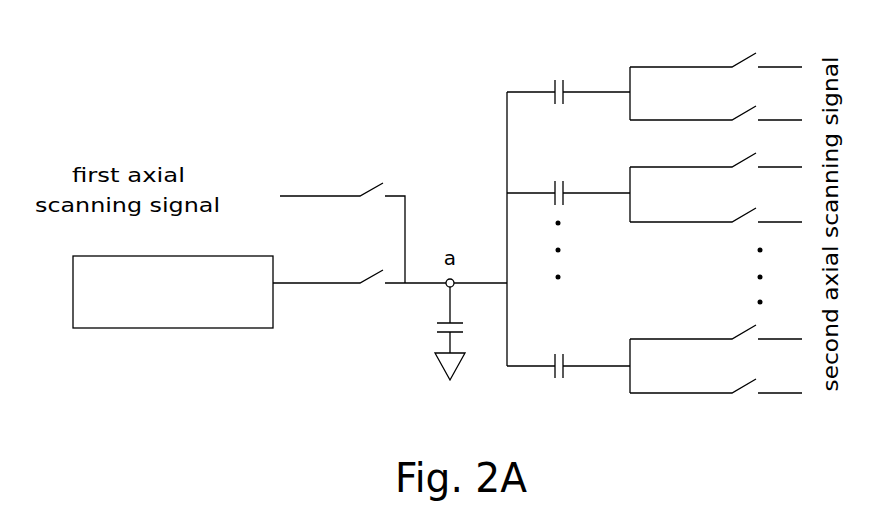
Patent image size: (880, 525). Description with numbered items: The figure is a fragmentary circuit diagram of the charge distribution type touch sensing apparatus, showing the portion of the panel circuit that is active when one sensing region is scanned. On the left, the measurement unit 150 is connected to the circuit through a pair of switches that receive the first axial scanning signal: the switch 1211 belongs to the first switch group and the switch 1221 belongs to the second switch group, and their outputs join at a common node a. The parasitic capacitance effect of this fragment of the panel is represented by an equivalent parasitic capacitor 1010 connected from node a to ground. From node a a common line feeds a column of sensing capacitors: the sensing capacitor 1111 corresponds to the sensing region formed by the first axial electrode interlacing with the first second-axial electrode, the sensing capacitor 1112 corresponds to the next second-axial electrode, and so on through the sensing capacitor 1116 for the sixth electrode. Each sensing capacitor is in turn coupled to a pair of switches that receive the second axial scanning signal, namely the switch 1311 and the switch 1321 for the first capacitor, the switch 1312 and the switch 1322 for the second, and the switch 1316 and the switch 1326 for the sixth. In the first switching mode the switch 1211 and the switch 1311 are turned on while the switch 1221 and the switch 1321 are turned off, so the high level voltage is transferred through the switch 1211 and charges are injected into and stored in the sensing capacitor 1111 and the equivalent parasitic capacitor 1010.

The measurement unit 150 is at (132, 256).
The switch 1211 is at (372, 187).
The switch 1221 is at (372, 273).
The equivalent parasitic capacitor 1010 is at (432, 328).
The sensing capacitor 1111 is at (558, 75).
The sensing capacitor 1112 is at (558, 177).
The sensing capacitor 1116 is at (558, 350).
The switch 1311 is at (746, 58).
The switch 1321 is at (746, 111).
The switch 1312 is at (746, 158).
The switch 1322 is at (746, 213).
The switch 1316 is at (746, 330).
The switch 1326 is at (746, 384).